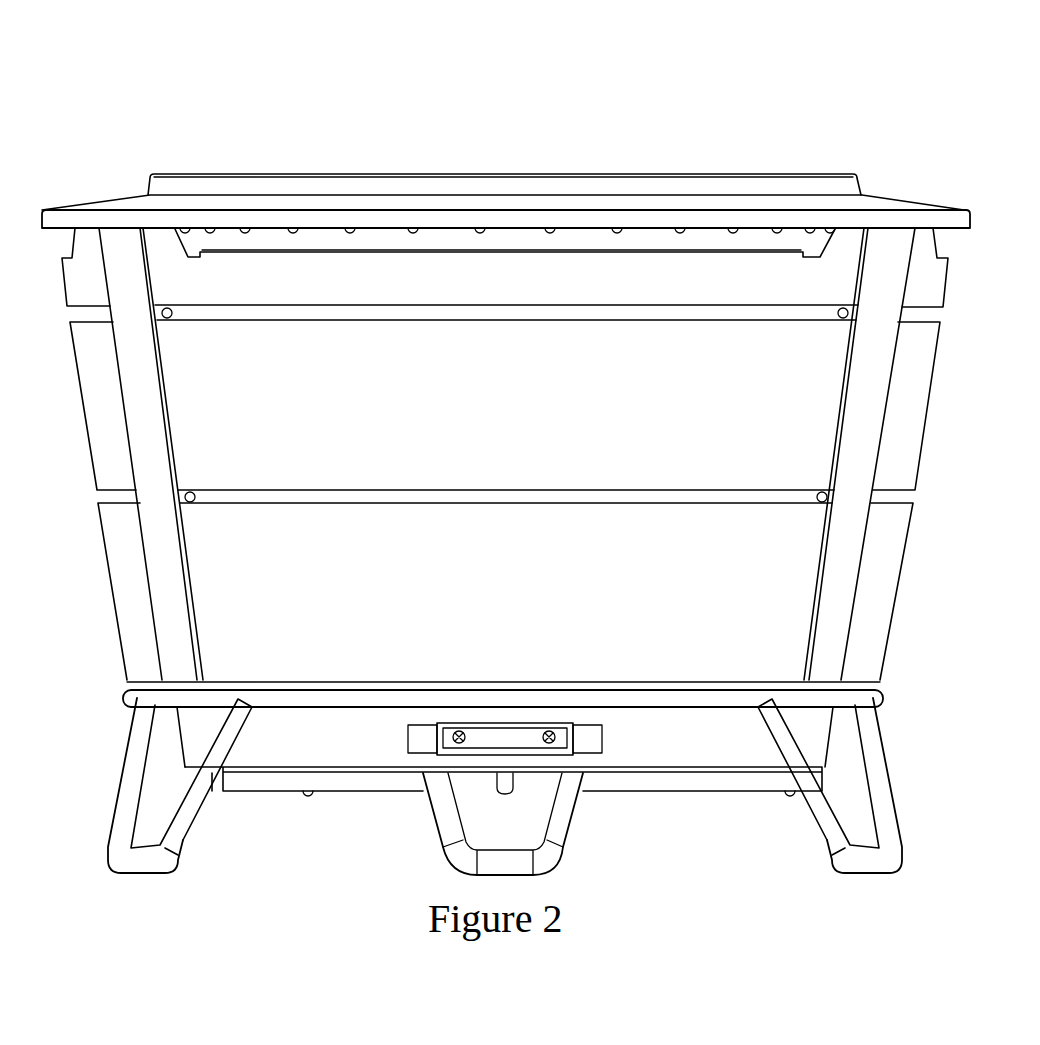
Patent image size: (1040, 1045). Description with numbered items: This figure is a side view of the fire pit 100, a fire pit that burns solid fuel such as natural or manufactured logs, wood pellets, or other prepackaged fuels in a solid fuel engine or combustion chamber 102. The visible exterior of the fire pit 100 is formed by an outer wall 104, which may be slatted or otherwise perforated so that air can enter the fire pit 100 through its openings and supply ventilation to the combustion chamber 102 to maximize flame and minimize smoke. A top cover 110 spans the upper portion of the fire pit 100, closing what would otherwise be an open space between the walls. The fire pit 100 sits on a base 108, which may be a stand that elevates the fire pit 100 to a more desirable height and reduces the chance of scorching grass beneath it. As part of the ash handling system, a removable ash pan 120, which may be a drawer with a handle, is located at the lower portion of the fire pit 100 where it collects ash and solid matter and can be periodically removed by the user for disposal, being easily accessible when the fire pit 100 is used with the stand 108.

The fire pit 100 is at (781, 96).
The combustion chamber 102 is at (532, 175).
The outer wall 104 is at (928, 403).
The base 108 is at (892, 773).
The top cover 110 is at (108, 199).
The ash pan 120 is at (503, 723).